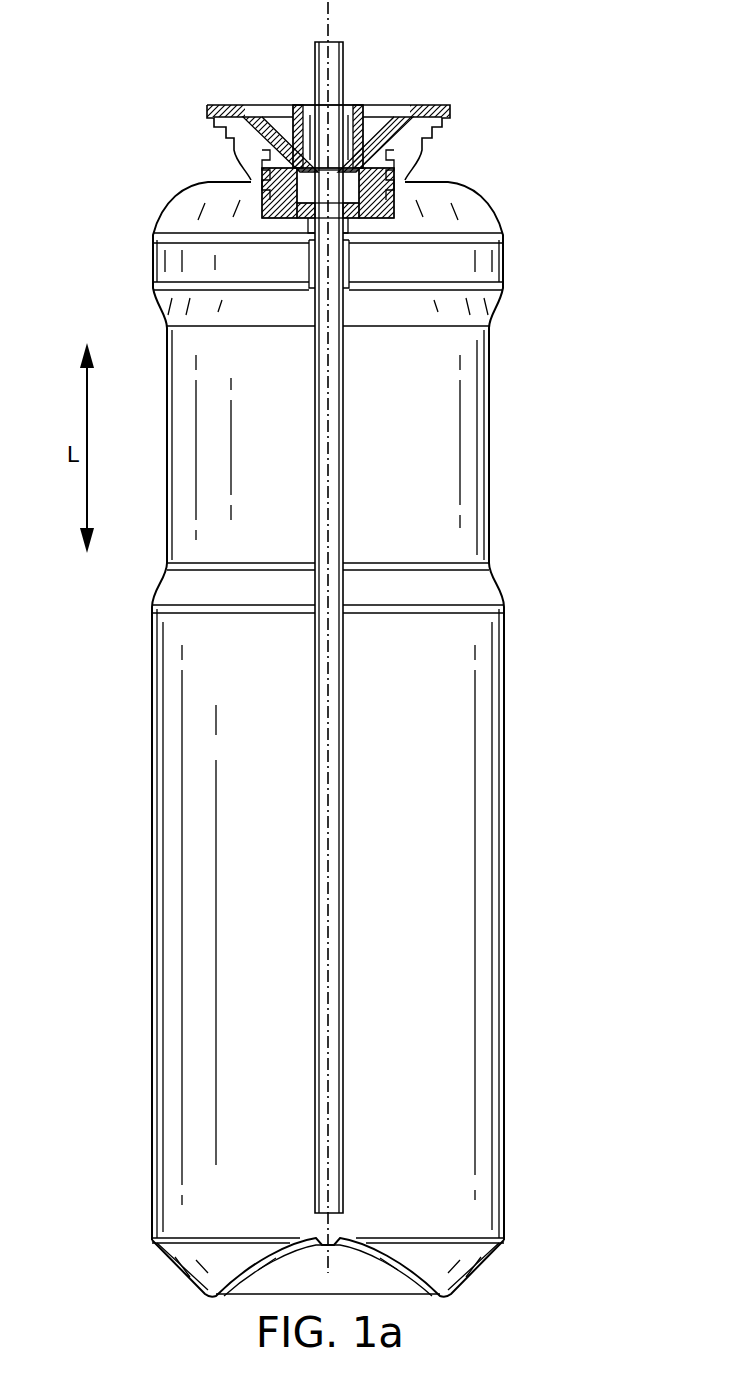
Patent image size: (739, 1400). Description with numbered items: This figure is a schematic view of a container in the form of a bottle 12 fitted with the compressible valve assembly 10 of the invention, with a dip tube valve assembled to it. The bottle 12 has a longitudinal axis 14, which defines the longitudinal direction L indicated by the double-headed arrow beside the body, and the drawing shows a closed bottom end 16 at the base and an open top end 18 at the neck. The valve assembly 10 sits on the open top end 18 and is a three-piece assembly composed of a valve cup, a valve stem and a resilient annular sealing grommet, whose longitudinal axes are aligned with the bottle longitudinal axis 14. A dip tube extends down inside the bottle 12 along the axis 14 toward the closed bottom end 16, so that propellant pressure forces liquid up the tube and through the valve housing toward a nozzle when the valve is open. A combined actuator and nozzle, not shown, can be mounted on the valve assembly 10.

The valve assembly 10 is at (250, 92).
The bottle 12 is at (512, 415).
The longitudinal axis 14 is at (330, 32).
The closed bottom end 16 is at (156, 1283).
The open top end 18 is at (180, 123).